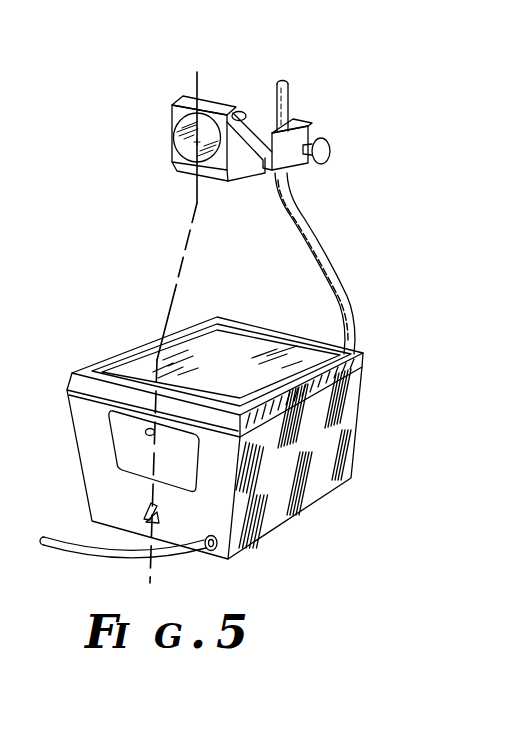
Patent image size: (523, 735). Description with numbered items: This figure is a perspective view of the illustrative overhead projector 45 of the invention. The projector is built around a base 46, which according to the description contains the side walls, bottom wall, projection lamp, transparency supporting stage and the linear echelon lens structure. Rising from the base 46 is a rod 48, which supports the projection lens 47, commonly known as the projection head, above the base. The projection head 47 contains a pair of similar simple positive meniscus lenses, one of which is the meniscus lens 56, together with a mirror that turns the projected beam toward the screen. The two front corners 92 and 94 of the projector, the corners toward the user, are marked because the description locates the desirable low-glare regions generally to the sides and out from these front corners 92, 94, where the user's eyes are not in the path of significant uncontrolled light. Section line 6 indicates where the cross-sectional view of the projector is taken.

The section line 6- 6 is at (168, 69).
The overhead projector 45 is at (332, 257).
The base 46 is at (368, 402).
The projection lens 47 is at (178, 170).
The rod 48 is at (304, 227).
The positive meniscus lens 56 is at (171, 135).
The front corner 92 is at (72, 373).
The front corner 94 is at (238, 414).